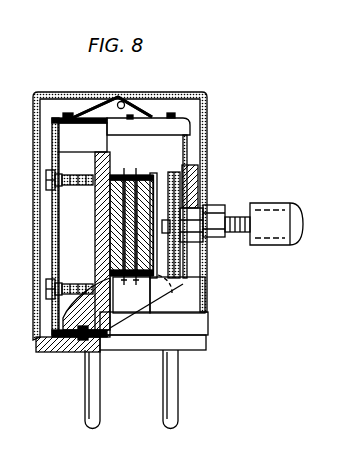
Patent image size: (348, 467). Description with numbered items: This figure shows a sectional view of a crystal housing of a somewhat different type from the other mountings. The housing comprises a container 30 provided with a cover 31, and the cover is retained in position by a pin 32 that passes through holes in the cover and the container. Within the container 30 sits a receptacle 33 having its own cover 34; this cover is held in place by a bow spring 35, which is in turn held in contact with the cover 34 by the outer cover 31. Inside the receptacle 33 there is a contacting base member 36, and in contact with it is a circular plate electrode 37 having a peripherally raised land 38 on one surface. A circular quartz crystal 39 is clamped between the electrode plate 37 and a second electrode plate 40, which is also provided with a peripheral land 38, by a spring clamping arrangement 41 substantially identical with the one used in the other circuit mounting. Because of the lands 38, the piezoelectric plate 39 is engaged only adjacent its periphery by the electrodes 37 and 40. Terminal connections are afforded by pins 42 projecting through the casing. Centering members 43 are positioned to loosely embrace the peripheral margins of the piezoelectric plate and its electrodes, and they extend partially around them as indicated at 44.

The container 30 is at (207, 142).
The cover 31 is at (177, 93).
The pin 32 is at (119, 97).
The receptacle 33 is at (192, 162).
The cover 34 is at (100, 97).
The bow spring 35 is at (148, 97).
The contacting base member 36 is at (97, 206).
The circular plate electrode 37 is at (110, 153).
The peripherally raised land 38 is at (137, 176).
The circular quartz crystal 39 is at (131, 295).
The second electrode plate 40 is at (150, 175).
The spring clamping arrangement 41 is at (228, 218).
The pins 42 is at (180, 397).
The centering members 43 is at (127, 310).
The extension of centering members 44 is at (157, 301).